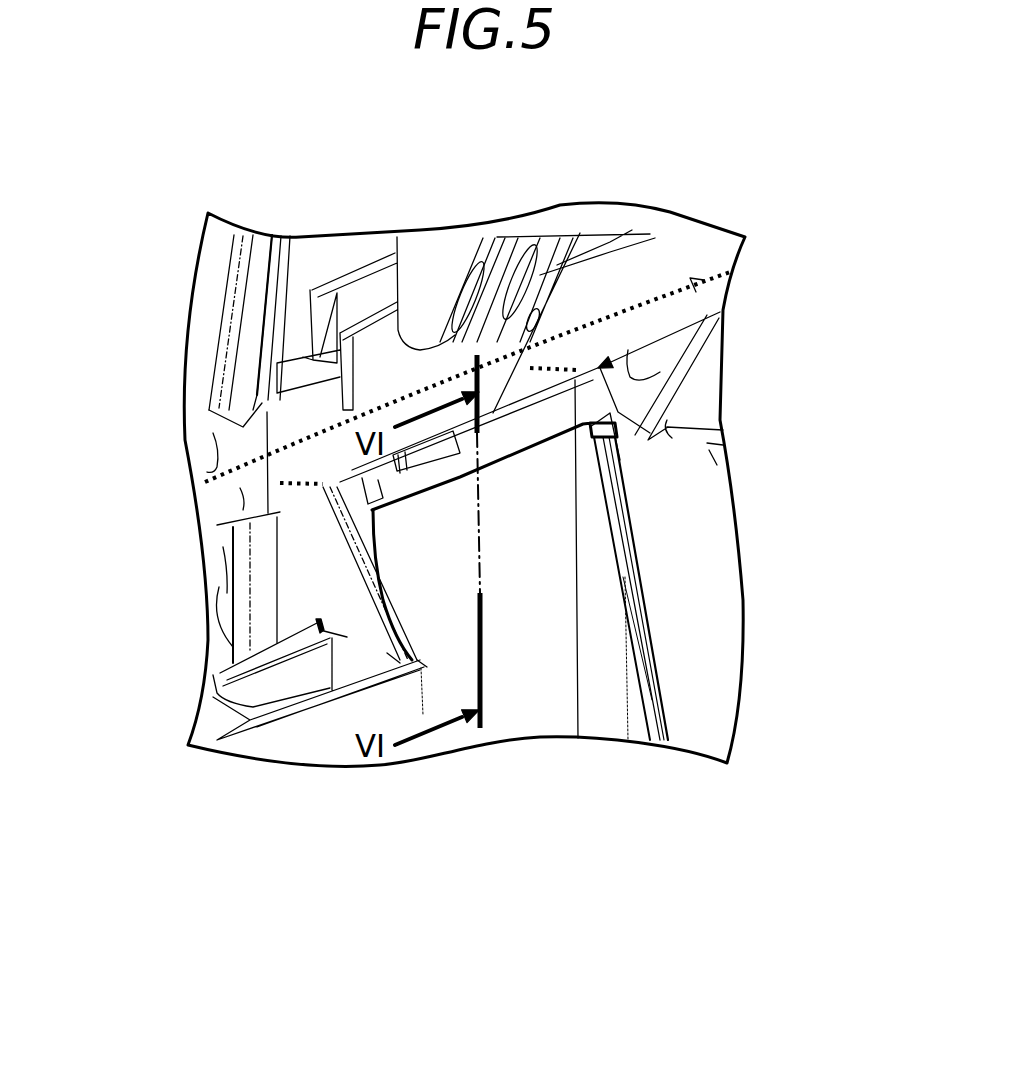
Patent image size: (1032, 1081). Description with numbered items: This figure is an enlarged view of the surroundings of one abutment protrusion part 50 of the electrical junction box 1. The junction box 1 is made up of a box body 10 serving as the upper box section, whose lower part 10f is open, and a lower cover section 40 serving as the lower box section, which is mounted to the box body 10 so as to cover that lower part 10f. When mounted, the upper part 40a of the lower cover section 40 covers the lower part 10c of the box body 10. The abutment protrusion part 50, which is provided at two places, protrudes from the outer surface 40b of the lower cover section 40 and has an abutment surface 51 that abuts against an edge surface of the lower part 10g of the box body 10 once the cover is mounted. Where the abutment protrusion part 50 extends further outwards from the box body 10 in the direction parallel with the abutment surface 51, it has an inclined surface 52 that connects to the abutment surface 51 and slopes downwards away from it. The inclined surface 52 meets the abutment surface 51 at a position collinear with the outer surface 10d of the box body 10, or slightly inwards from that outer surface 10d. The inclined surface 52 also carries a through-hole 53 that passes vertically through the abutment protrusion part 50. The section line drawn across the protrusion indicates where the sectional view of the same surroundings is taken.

The electrical junction box 1 is at (460, 168).
The box body 10 is at (651, 281).
The lower part of the box body 10f is at (690, 278).
The abutment surface 51 is at (577, 367).
The lower part of the box body 10g is at (660, 372).
The outer surface of the box body 10d is at (213, 470).
The lower part of the box body 10c is at (245, 507).
The upper part of the lower cover section 40a is at (225, 587).
The outer surface of the lower cover section 40b is at (235, 645).
The through-hole 53 is at (378, 484).
The inclined surface 52 is at (512, 433).
The lower cover section 40 is at (700, 681).
The abutment protrusion part 50 is at (550, 678).